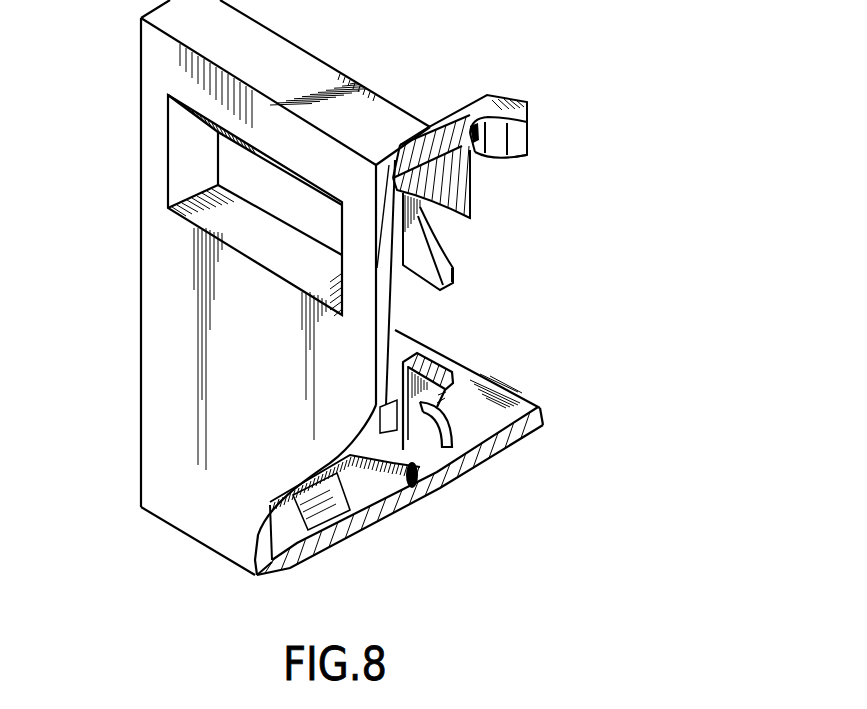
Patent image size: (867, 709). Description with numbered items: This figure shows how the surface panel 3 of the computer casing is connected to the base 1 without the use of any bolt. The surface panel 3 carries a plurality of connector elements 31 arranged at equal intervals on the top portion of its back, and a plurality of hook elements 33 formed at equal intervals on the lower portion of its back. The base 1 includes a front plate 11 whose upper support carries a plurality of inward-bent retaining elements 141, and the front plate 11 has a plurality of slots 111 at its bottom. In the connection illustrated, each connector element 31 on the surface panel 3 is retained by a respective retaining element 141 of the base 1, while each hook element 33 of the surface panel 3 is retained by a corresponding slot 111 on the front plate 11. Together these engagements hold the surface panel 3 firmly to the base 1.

The surface panel 3 is at (136, 204).
The connector element 31 is at (458, 132).
The retaining element 141 is at (472, 177).
The base 1 is at (472, 358).
The front plate 11 is at (353, 460).
The slot 111 is at (293, 523).
The hook element 33 is at (414, 492).